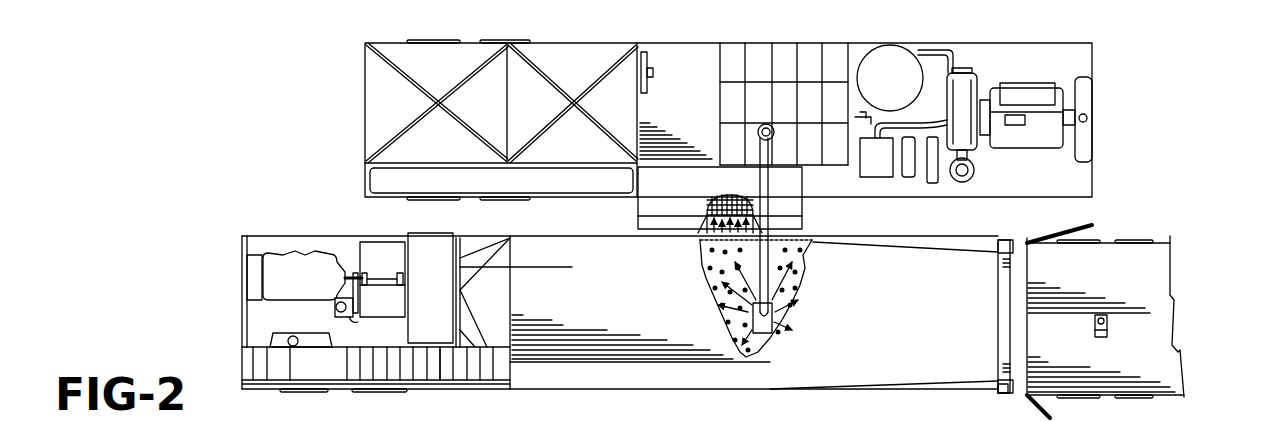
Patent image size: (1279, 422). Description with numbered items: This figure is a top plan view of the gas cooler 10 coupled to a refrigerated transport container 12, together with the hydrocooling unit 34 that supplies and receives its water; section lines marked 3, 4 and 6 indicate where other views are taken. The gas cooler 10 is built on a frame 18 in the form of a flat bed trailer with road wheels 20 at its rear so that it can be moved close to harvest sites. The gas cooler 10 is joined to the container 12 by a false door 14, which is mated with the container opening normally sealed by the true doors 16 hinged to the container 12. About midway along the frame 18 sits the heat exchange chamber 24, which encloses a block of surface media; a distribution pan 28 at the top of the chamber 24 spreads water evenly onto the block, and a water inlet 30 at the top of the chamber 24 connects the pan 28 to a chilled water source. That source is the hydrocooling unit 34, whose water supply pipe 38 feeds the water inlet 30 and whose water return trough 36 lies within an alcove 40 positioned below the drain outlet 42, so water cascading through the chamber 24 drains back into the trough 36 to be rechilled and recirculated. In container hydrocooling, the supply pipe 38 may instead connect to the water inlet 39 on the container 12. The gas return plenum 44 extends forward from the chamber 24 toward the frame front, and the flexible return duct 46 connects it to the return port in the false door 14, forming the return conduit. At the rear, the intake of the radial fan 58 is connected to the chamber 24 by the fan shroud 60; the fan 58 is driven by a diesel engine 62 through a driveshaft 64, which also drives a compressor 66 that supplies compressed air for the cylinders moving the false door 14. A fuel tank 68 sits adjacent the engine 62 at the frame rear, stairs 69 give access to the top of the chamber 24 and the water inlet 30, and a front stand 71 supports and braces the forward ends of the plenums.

The gas cooler 10 is at (257, 215).
The refrigerated transport container 12 is at (1128, 230).
The false door 14 is at (1023, 273).
The true doors 16 is at (1063, 232).
The frame 18 is at (243, 318).
The road wheels 20 is at (310, 393).
The heat exchange chamber 24 is at (635, 378).
The distribution pan 28 is at (808, 278).
The water inlet 30 is at (790, 315).
The hydrocooling unit 34 is at (365, 108).
The water return trough 36 is at (710, 200).
The water supply pipe 38 is at (772, 186).
The water inlet 39 is at (1107, 328).
The alcove 40 is at (802, 214).
The drain outlet 42 is at (707, 224).
The gas return plenum 44 is at (927, 367).
The flexible return duct 46 is at (1013, 297).
The fan 58 is at (423, 240).
The fan shroud 60 is at (495, 287).
The diesel engine 62 is at (313, 272).
The driveshaft 64 is at (397, 256).
The compressor 66 is at (357, 317).
The fuel tank 68 is at (312, 337).
The stairs 69 is at (442, 372).
The front stand 71 is at (1003, 398).
The section line 3- 3 is at (1075, 340).
The section line 4- 4 is at (435, 243).
The section line 6- 6 is at (753, 180).